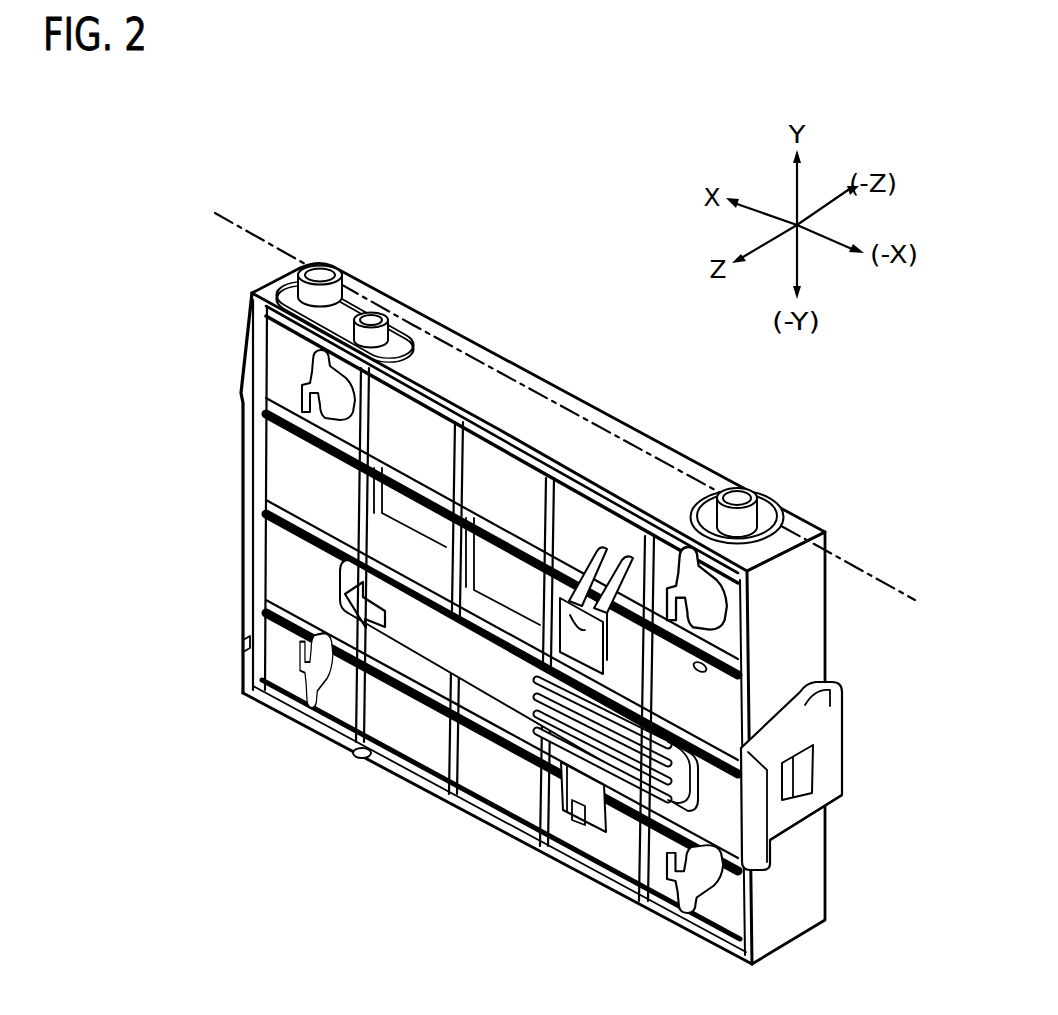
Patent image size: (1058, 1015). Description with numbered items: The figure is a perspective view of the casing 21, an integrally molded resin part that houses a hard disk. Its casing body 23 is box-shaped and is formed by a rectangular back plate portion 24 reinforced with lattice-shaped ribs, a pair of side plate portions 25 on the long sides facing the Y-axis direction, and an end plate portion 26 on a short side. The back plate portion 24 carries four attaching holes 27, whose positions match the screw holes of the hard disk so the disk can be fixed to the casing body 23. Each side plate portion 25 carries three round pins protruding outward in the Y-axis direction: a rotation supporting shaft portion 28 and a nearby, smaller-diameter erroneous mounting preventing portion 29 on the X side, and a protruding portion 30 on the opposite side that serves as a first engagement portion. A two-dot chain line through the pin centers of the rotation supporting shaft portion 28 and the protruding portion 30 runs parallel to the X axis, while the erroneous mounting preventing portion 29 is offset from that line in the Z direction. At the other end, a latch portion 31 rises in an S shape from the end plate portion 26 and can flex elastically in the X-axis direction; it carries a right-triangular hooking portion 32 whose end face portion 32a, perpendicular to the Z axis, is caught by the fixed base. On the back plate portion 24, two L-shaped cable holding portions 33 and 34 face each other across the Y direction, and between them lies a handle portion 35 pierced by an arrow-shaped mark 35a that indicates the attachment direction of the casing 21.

The casing 21 is at (540, 601).
The casing body 23 is at (423, 787).
The back plate portion 24 is at (292, 572).
The side plate portions 25 is at (556, 418).
The end plate portion 26 is at (793, 634).
The attaching holes 27 is at (355, 390).
The rotation supporting shaft portion 28 is at (322, 272).
The erroneous mounting preventing portion 29 is at (372, 322).
The protruding portion 30 is at (733, 492).
The latch portion 31 is at (813, 732).
The hooking portion 32 is at (805, 778).
The end face portion 32a is at (810, 820).
The cable holding portion 33 is at (570, 595).
The cable holding portion 34 is at (586, 785).
The handle portion 35 is at (455, 660).
The mark 35a is at (256, 678).